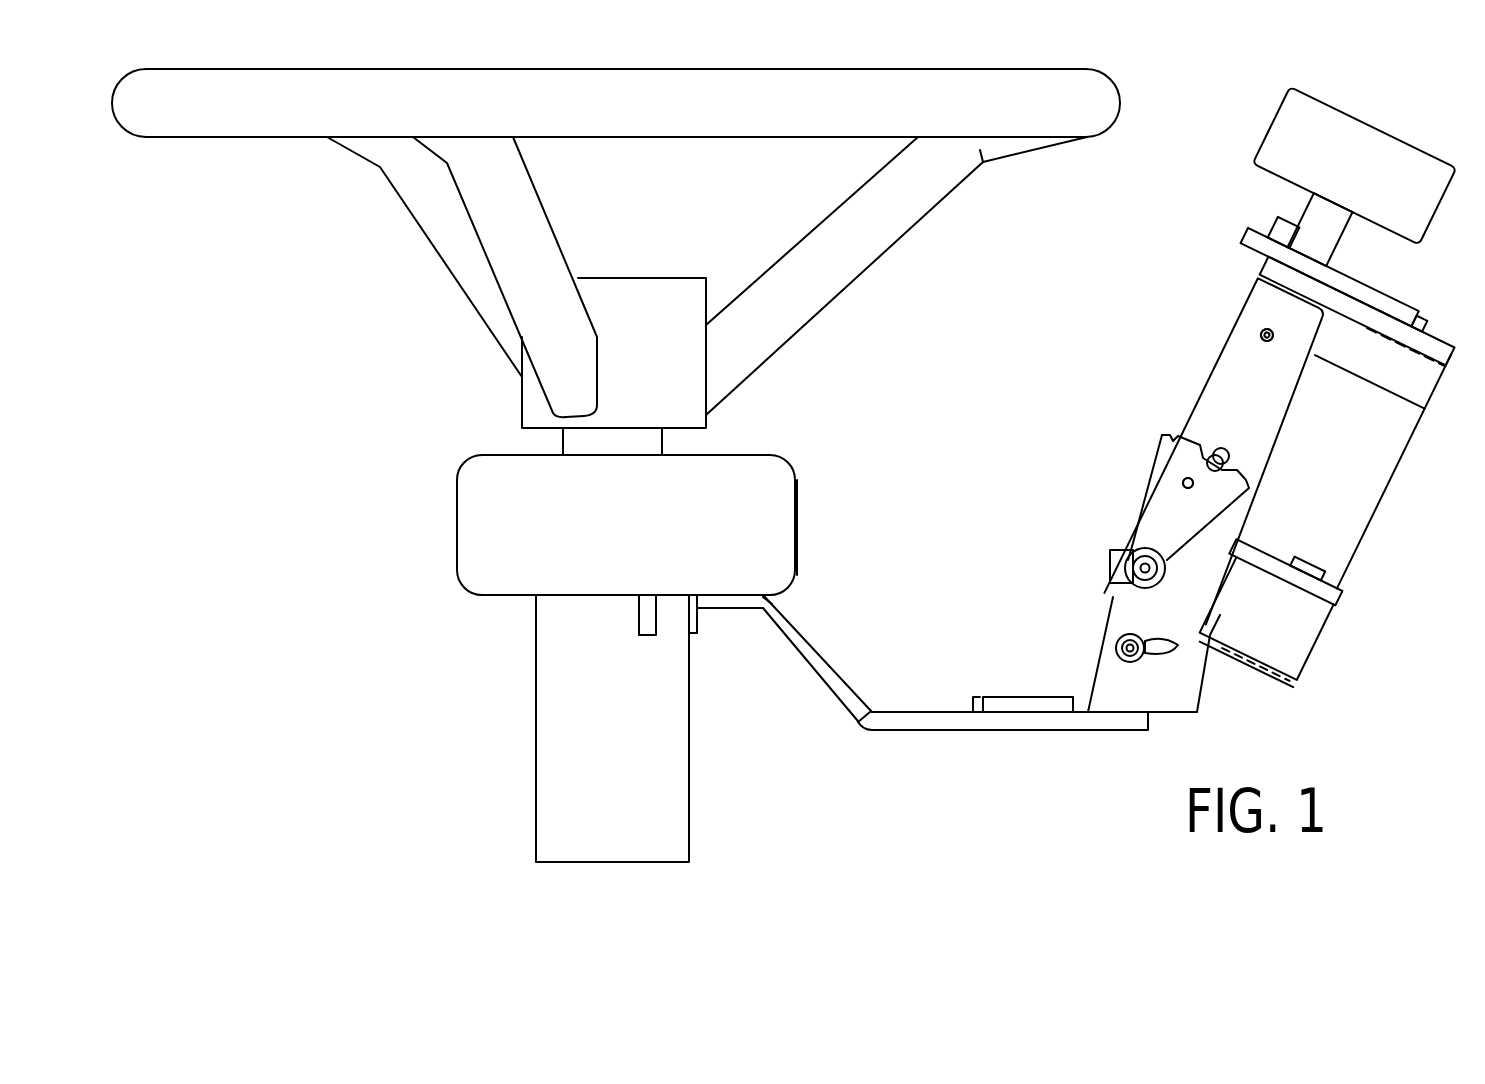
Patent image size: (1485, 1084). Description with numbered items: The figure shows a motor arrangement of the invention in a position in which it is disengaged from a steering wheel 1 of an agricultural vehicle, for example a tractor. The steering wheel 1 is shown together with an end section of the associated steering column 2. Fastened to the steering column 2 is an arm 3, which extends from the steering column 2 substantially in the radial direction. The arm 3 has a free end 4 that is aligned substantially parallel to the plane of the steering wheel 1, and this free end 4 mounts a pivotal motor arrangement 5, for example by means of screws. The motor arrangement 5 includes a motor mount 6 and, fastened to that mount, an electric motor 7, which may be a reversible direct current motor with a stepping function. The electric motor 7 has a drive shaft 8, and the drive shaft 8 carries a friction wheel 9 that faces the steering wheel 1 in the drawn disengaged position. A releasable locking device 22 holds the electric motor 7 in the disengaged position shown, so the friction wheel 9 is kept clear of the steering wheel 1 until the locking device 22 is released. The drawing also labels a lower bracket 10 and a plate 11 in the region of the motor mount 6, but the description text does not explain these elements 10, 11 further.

The steering wheel 1 is at (1083, 66).
The steering column 2 is at (689, 768).
The arm 3 is at (817, 647).
The free end 4 is at (950, 730).
The motor arrangement 5 is at (1228, 458).
The motor mount 6 is at (1140, 505).
The electric motor 7 is at (1318, 494).
The drive shaft 8 is at (1320, 229).
The friction wheel 9 is at (1335, 157).
The lower bracket 10 is at (1113, 607).
The plate 11 is at (1267, 335).
The releasable locking device 22 is at (1162, 421).